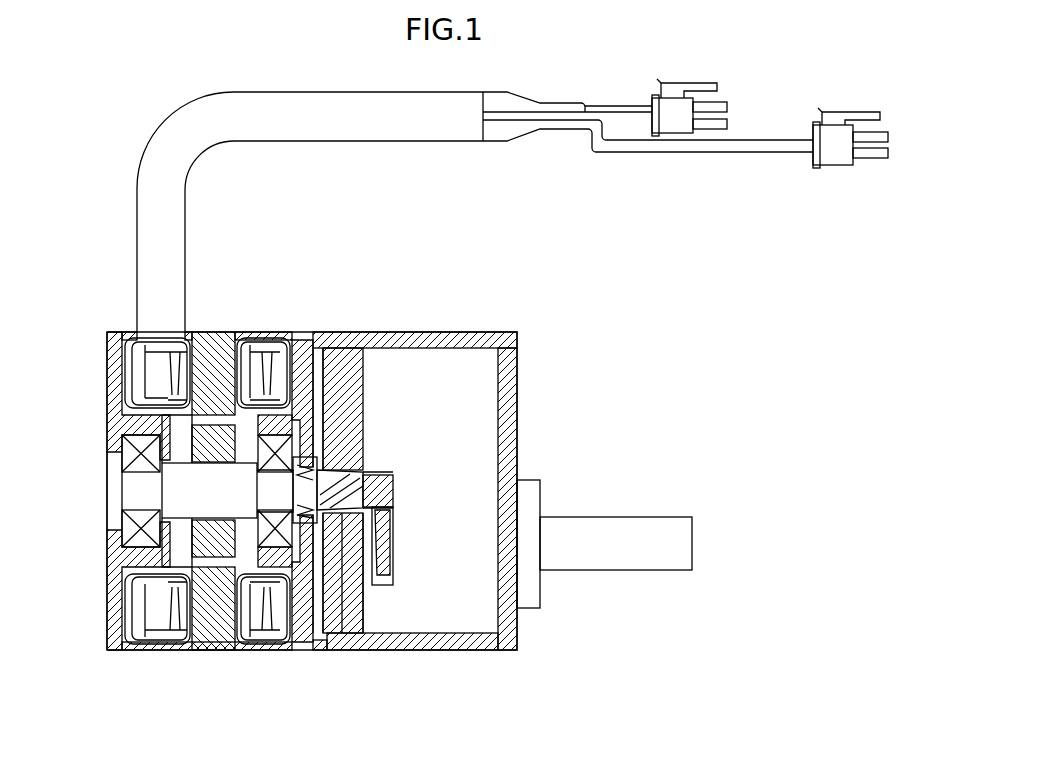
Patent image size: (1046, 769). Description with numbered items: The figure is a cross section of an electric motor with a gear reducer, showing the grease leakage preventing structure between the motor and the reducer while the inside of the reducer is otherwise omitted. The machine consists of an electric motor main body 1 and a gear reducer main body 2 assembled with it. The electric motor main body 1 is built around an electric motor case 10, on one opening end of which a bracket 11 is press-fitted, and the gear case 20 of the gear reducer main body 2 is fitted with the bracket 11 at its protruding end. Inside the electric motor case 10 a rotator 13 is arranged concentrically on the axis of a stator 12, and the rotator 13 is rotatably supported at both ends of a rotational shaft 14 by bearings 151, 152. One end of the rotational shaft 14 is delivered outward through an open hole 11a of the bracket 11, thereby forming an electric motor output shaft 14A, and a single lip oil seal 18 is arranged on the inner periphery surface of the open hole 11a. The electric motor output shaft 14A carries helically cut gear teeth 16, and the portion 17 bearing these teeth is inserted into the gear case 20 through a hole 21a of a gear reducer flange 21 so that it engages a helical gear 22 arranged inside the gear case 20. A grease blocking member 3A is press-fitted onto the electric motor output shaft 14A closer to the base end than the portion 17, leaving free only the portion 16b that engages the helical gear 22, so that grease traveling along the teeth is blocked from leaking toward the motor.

The electric motor main body 1 is at (128, 667).
The gear reducer main body 2 is at (517, 630).
The grease blocking member 3A is at (383, 510).
The electric motor case 10 is at (108, 620).
The bracket 11 is at (290, 647).
The open hole 11a is at (323, 390).
The stator 12 is at (215, 628).
The rotator 13 is at (213, 438).
The rotational shaft 14 is at (148, 489).
The electric motor output shaft 14A is at (395, 483).
The bearing 151 is at (120, 443).
The bearing 152 is at (296, 550).
The helically cut gear teeth 16 is at (397, 490).
The portion for engagement with the helical gear 16b is at (395, 500).
The portion with the helically cut gear teeth 17 is at (380, 473).
The oil seal 18 is at (278, 460).
The gear case 20 is at (493, 342).
The gear reducer flange 21 is at (350, 377).
The hole 21a is at (384, 588).
The helical gear 22 is at (393, 495).